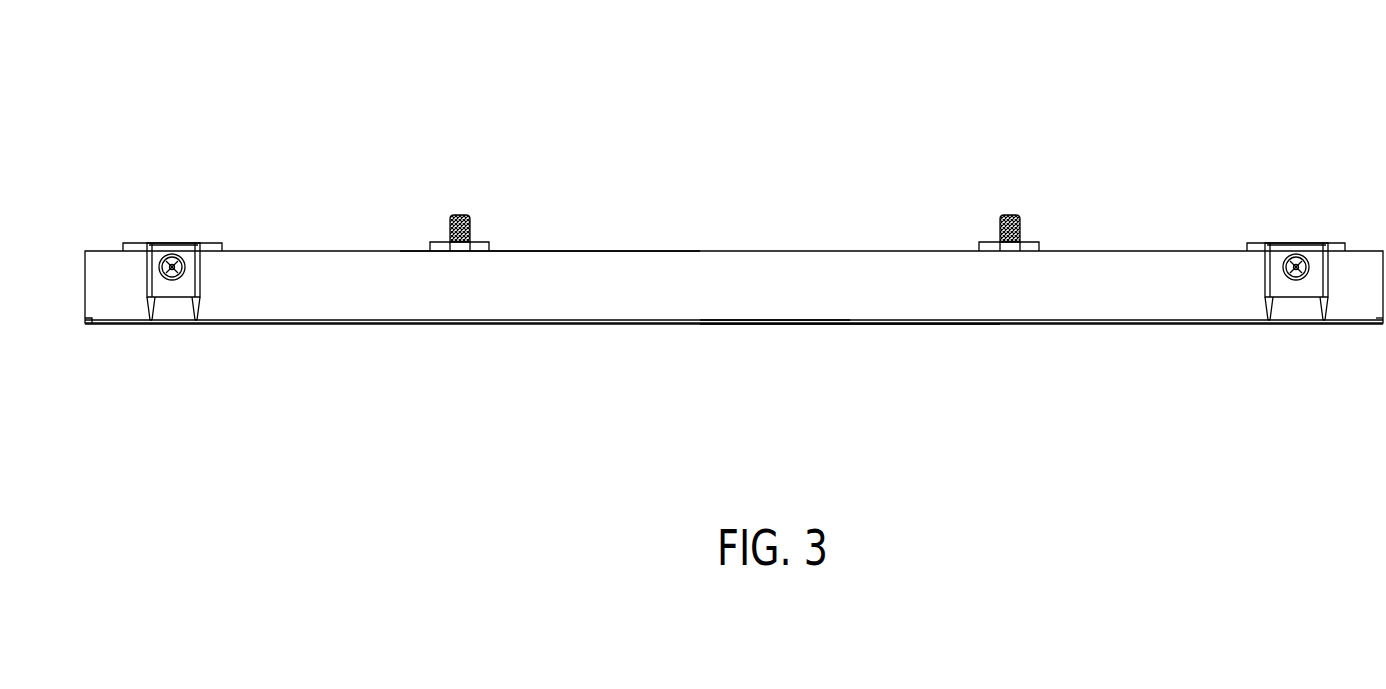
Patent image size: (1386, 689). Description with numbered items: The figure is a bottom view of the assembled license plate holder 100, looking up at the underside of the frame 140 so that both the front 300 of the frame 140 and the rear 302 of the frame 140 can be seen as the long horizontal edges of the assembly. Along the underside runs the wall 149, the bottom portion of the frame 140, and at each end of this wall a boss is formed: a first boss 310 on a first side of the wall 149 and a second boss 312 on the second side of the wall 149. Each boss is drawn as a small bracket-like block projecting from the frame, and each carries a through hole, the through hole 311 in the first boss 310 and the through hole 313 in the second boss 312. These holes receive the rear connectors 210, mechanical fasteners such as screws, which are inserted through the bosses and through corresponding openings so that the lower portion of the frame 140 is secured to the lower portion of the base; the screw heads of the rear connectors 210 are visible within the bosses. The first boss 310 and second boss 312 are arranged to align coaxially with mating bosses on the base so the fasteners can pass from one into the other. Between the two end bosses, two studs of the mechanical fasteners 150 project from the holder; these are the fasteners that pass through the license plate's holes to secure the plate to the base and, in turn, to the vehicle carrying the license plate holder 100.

The license plate holder 100 is at (743, 152).
The frame 140 is at (888, 300).
The wall 149 is at (767, 283).
The mechanical fastener 150 is at (459, 214).
The rear connector 210 is at (167, 250).
The front 300 is at (578, 323).
The rear 302 is at (622, 251).
The first boss 310 is at (179, 300).
The through hole 311 is at (178, 250).
The second boss 312 is at (1292, 300).
The through hole 313 is at (1297, 253).